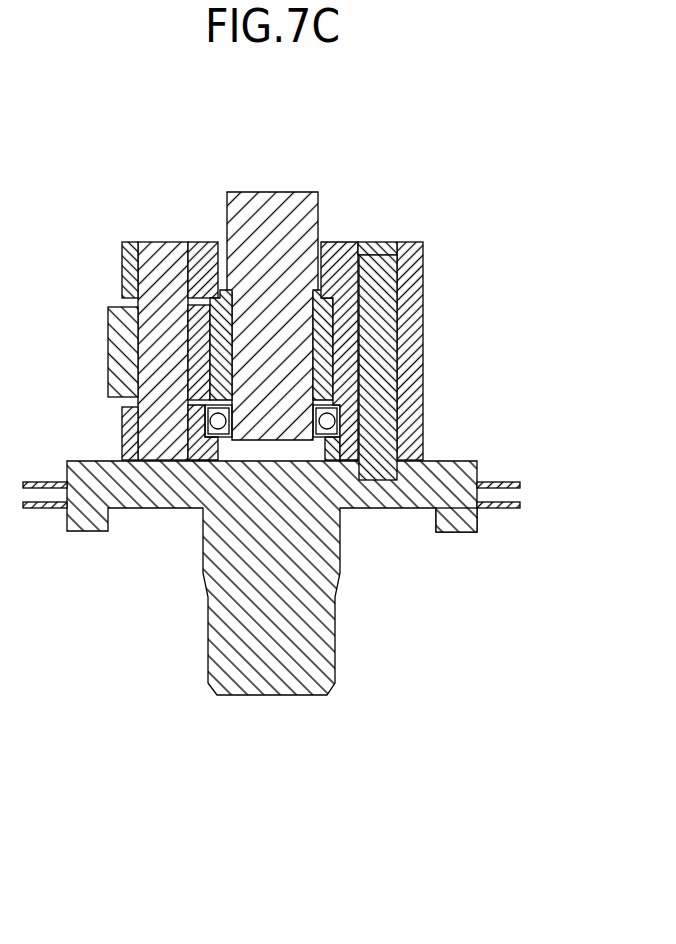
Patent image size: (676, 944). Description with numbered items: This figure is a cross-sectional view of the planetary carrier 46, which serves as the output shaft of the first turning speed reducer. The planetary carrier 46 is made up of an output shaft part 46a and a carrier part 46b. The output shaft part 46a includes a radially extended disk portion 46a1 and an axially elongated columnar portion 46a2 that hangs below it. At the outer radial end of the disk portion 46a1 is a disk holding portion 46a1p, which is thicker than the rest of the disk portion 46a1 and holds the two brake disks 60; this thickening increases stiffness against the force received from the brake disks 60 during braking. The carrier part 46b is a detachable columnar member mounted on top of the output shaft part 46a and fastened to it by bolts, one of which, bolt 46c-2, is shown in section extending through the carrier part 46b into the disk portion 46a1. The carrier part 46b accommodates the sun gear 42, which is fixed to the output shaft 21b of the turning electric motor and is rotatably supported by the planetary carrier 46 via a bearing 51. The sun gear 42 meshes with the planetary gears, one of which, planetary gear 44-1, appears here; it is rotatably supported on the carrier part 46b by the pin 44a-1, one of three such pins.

The output shaft 21b is at (262, 194).
The pin 44a-1 is at (148, 242).
The bolt 46c-2 is at (375, 242).
The planetary gear 44-1 is at (108, 312).
The planetary carrier 46 is at (106, 426).
The sun gear 42 is at (333, 323).
The carrier part 46b is at (423, 358).
The bearing 51 is at (338, 418).
The disk holding portion 46a1p is at (452, 532).
The brake disks 60 is at (520, 486).
The disk portion 46a1 is at (385, 510).
The columnar portion 46a2 is at (336, 640).
The output shaft part 46a is at (309, 578).